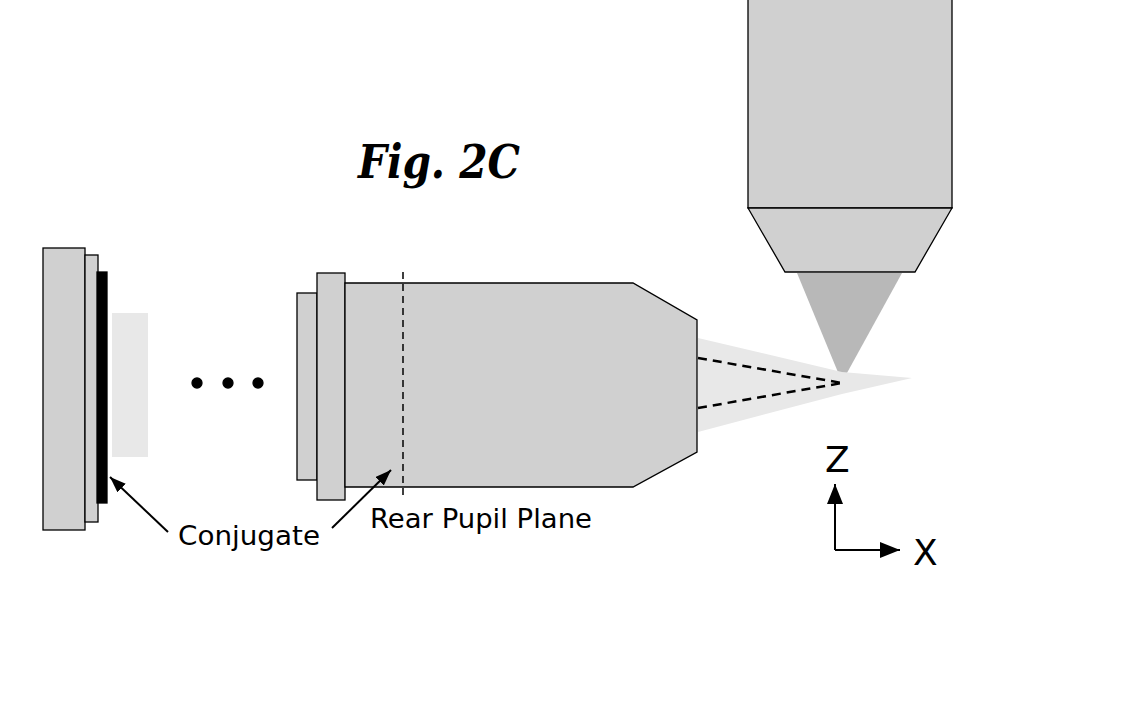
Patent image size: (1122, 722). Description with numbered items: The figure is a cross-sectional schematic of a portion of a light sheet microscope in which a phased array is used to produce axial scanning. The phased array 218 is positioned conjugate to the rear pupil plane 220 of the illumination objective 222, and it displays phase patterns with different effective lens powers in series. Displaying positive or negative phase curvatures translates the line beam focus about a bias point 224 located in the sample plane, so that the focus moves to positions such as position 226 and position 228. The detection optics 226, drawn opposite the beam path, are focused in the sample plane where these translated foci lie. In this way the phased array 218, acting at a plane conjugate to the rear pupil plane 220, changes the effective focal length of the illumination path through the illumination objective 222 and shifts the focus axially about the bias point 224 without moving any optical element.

The phased array 218 is at (69, 531).
The rear pupil plane 220 is at (403, 423).
The illumination objective 222 is at (528, 390).
The bias point 224 is at (843, 387).
The detection optics 226 is at (872, 127).
The position 228 is at (904, 378).